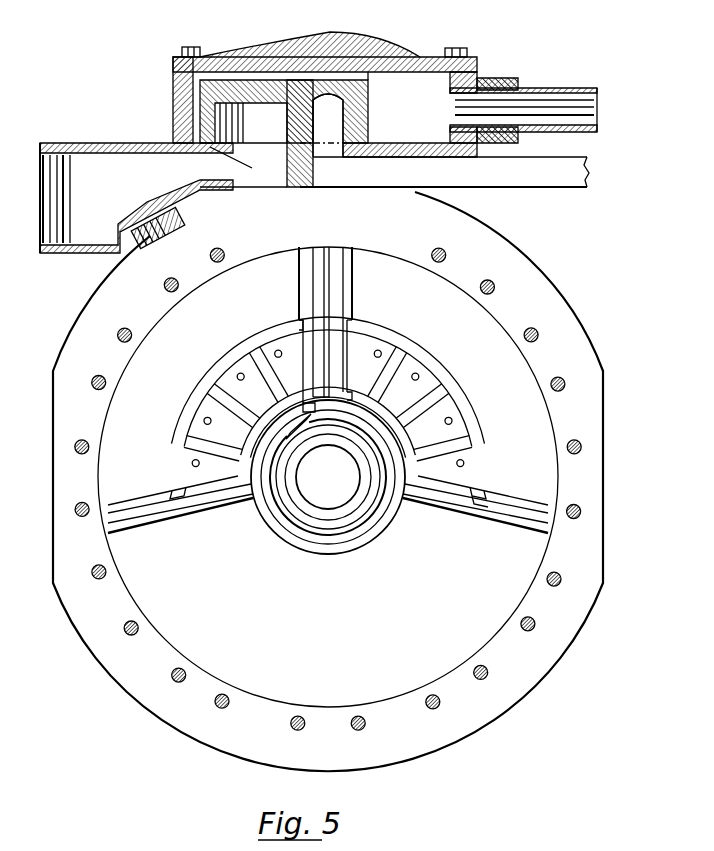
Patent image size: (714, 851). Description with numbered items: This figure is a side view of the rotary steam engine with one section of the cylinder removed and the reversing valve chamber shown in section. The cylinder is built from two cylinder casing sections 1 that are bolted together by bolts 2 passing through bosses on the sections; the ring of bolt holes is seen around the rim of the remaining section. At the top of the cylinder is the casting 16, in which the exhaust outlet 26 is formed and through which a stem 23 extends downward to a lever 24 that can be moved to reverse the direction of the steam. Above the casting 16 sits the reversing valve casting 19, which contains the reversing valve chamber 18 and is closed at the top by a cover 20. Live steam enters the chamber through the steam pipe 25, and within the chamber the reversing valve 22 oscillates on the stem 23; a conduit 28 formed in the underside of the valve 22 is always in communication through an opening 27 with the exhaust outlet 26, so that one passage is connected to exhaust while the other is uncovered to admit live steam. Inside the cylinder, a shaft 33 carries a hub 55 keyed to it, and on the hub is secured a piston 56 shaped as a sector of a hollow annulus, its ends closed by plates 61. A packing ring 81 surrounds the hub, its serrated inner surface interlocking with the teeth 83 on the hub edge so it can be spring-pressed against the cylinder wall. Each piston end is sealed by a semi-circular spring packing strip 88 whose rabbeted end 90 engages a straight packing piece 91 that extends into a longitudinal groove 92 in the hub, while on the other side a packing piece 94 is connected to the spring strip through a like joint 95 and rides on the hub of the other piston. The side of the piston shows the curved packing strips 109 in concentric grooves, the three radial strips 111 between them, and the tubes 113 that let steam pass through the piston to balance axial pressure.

The cylinder casing sections 1 is at (75, 347).
The bolts 2 is at (485, 678).
The casting 16 is at (313, 187).
The reversing valve chamber 18 is at (415, 88).
The reversing valve casting 19 is at (478, 72).
The cover 20 is at (370, 52).
The reversing valve 22 is at (292, 75).
The stem 23 is at (322, 125).
The lever 24 is at (558, 183).
The steam pipe 25 is at (565, 90).
The exhaust outlet 26 is at (136, 198).
The opening 27 is at (185, 132).
The conduit 28 is at (263, 100).
The shaft 33 is at (330, 503).
The hub 55 is at (340, 522).
The piston 56 is at (532, 415).
The plates 61 is at (200, 510).
The packing ring 81 is at (357, 542).
The teeth 83 is at (306, 537).
The spring packing strip 88 is at (350, 278).
The rabbeted end 90 is at (302, 322).
The straight packing piece 91 is at (305, 345).
The longitudinal groove 92 is at (300, 426).
The packing piece 94 is at (350, 340).
The joint 95 is at (475, 500).
The packing strips 109 is at (425, 360).
The radial strips 111 is at (395, 360).
The tubes 113 is at (204, 420).